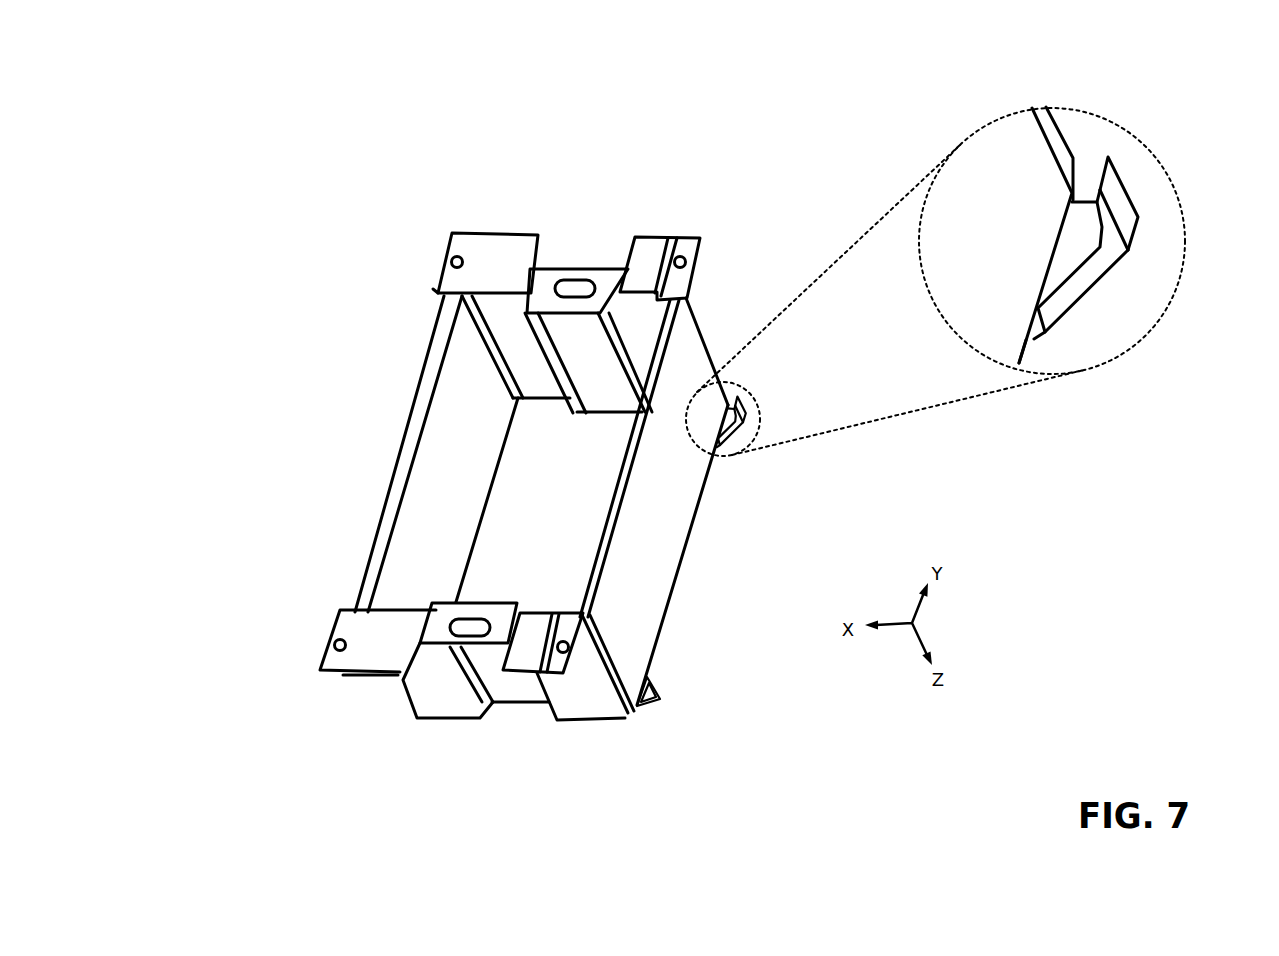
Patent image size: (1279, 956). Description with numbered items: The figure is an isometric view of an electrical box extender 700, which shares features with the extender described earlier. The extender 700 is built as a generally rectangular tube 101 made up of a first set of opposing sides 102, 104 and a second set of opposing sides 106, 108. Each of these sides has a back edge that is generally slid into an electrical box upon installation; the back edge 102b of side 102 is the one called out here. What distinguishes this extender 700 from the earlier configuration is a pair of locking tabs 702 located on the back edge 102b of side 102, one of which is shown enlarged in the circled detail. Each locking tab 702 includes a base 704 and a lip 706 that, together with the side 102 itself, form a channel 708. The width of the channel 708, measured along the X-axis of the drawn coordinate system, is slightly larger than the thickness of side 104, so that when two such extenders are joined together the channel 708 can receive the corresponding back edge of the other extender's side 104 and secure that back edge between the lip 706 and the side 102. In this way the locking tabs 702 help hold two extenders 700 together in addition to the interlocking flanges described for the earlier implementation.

The electrical box extender 700 is at (368, 110).
The generally rectangular tube 101 is at (706, 296).
The side 102 is at (657, 548).
The back edge 102b is at (1035, 363).
The side 104 is at (458, 496).
The side 106 is at (537, 383).
The side 108 is at (592, 708).
The locking tab 702 is at (672, 707).
The base 704 is at (1073, 283).
The lip 706 is at (1120, 207).
The channel 708 is at (1085, 190).